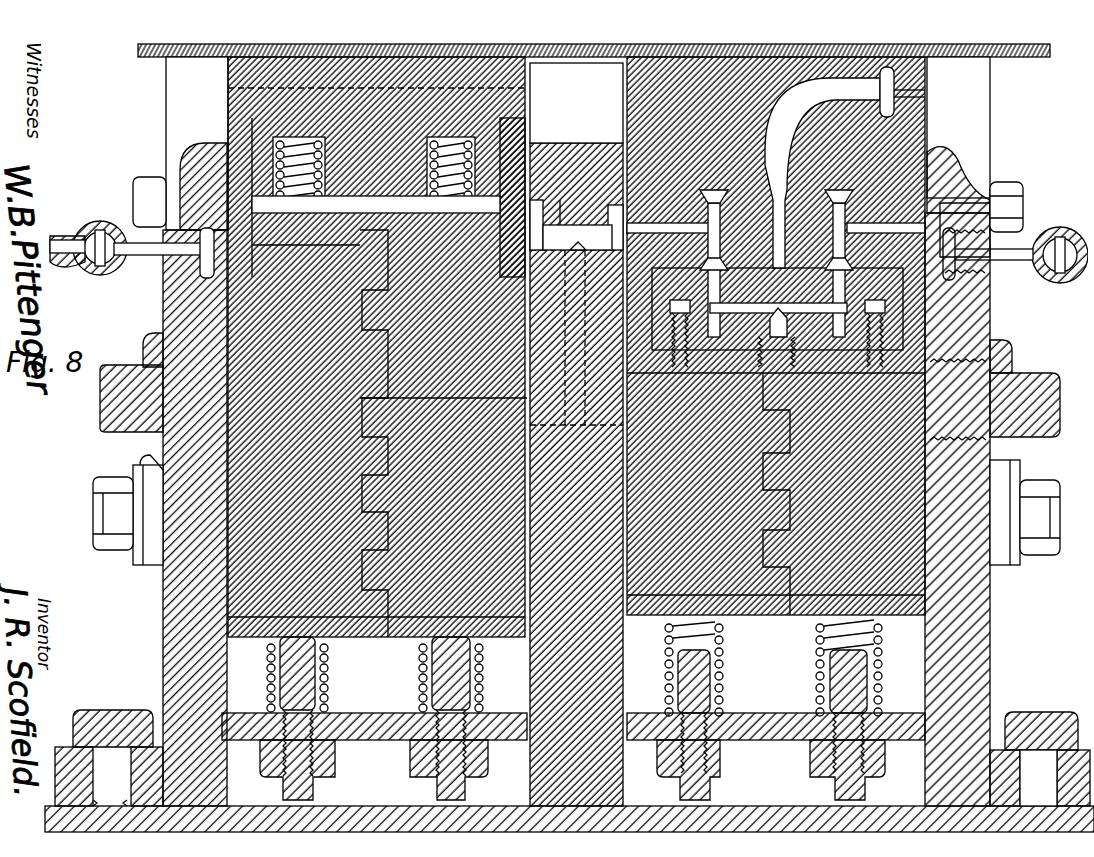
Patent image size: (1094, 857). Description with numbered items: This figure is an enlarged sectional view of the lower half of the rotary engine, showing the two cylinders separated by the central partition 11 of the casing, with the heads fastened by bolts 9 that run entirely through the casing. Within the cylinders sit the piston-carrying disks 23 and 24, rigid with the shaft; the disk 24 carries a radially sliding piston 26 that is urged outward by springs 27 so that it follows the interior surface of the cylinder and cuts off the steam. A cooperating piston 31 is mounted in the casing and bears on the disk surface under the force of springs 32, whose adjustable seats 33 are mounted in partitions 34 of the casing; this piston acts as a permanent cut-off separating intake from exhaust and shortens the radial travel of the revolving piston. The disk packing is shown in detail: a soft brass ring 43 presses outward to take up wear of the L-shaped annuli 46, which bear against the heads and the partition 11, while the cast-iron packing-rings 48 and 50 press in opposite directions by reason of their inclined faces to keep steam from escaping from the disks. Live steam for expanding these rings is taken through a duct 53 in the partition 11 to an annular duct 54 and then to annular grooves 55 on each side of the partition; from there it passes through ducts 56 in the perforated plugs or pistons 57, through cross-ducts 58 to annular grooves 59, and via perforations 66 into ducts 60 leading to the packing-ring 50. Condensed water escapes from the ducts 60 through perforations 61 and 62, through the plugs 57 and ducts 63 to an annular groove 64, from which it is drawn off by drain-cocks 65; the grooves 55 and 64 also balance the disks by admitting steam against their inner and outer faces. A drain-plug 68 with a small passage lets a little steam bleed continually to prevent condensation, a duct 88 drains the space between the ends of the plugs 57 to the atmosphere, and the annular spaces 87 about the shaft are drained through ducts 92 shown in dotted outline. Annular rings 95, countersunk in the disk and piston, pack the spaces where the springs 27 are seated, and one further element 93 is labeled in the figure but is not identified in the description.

The bolts 9 is at (1005, 625).
The partition 11 is at (530, 782).
The piston-carrying disk 23 is at (838, 68).
The piston-carrying disk 24 is at (228, 72).
The piston 26 is at (240, 322).
The springs 27 is at (376, 205).
The cooperating piston 31 is at (230, 470).
The springs 32 is at (430, 690).
The adjustable seats 33 is at (430, 664).
The partitions 34 is at (375, 742).
The soft brass ring 43 is at (800, 320).
The L-shaped annuli 46 is at (880, 240).
The cast-iron packing-ring 48 is at (885, 318).
The cast-iron ring 50 is at (850, 300).
The duct 53 is at (588, 240).
The annular duct 54 is at (577, 237).
The annular grooves 55 is at (538, 205).
The ducts 56 is at (560, 225).
The perforated plugs 57 is at (612, 210).
The cross-ducts 58 is at (683, 222).
The annular grooves 59 is at (716, 192).
The ducts 60 is at (790, 330).
The perforations 61 is at (1010, 265).
The perforations 62 is at (960, 203).
The ducts 63 is at (1010, 200).
The annular groove 64 is at (217, 213).
The drain-cocks 65 is at (100, 278).
The perforations 66 is at (960, 145).
The drain-plug 68 is at (1015, 430).
The annular spaces 87 is at (576, 103).
The duct 88 is at (932, 138).
The ducts 92 is at (228, 90).
The port 93 is at (858, 82).
The annular rings 95 is at (228, 165).